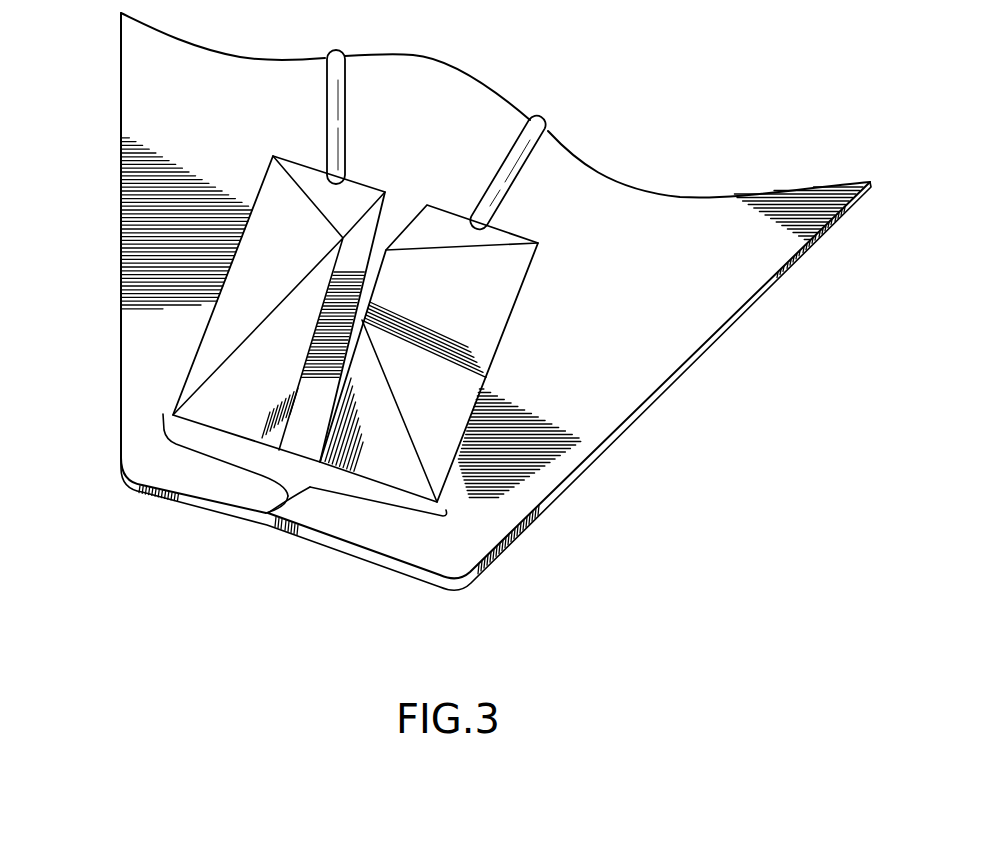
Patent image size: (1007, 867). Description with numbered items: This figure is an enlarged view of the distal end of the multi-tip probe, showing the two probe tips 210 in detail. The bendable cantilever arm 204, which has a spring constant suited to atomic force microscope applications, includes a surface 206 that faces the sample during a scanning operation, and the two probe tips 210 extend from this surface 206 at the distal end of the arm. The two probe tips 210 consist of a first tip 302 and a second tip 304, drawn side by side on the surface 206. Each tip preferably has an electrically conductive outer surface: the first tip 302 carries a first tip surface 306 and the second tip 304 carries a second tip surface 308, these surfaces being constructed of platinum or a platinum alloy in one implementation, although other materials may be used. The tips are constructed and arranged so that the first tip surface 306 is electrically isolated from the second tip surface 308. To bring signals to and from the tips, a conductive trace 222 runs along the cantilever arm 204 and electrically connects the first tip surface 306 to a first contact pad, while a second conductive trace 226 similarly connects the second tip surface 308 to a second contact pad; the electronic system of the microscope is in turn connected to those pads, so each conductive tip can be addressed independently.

The cantilever arm 204 is at (118, 240).
The surface 206 is at (703, 297).
The probe tips 210 is at (270, 505).
The conductive trace 222 is at (532, 146).
The second conductive trace 226 is at (330, 132).
The first tip 302 is at (485, 400).
The second tip 304 is at (193, 352).
The first tip surface 306 is at (455, 313).
The second tip surface 308 is at (292, 284).